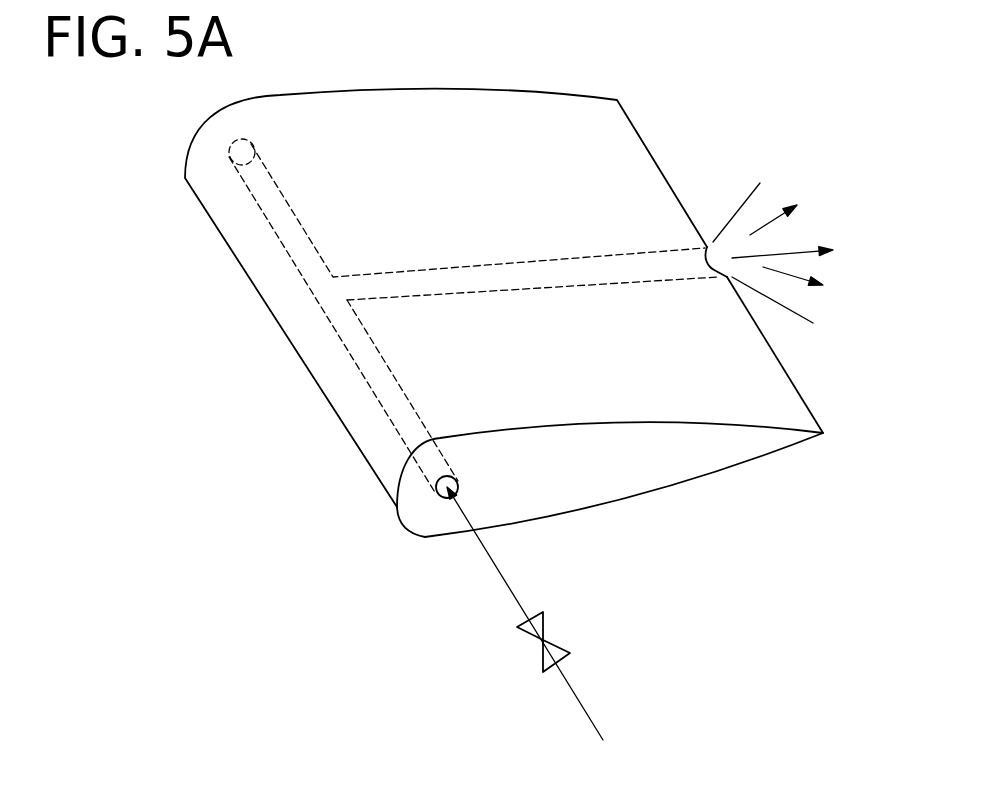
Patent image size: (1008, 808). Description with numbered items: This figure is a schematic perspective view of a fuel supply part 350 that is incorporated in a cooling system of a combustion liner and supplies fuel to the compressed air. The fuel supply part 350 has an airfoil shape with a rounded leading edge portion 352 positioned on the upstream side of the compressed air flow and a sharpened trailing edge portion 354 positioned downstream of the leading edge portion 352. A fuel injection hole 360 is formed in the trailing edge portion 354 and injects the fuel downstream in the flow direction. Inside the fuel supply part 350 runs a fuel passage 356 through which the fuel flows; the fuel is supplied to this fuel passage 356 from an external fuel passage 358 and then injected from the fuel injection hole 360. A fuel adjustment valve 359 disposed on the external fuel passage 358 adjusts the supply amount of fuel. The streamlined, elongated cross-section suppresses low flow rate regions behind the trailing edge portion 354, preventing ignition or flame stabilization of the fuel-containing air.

The fuel supply part 350 is at (683, 462).
The leading edge portion 352 is at (305, 332).
The trailing edge portion 354 is at (785, 368).
The fuel passage 356 is at (395, 403).
The external fuel passage 358 is at (582, 702).
The fuel adjustment valve 359 is at (555, 645).
The fuel injection hole 360 is at (715, 258).